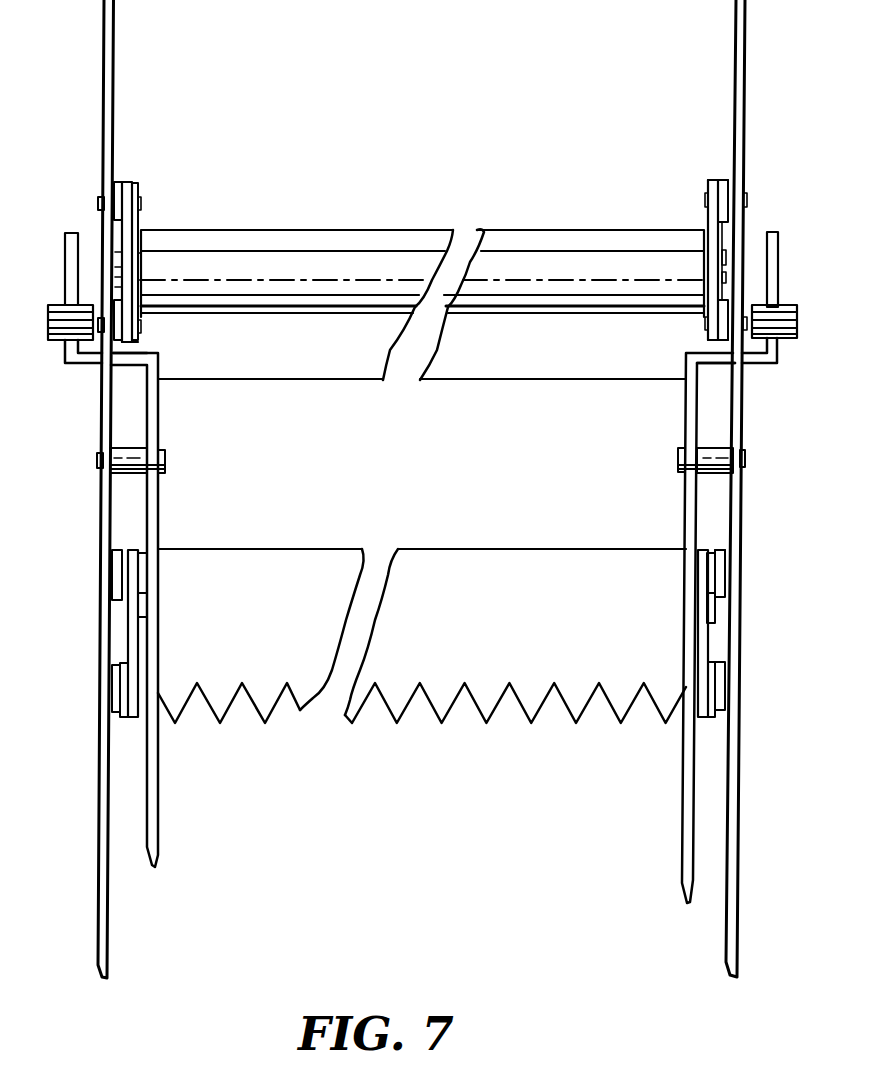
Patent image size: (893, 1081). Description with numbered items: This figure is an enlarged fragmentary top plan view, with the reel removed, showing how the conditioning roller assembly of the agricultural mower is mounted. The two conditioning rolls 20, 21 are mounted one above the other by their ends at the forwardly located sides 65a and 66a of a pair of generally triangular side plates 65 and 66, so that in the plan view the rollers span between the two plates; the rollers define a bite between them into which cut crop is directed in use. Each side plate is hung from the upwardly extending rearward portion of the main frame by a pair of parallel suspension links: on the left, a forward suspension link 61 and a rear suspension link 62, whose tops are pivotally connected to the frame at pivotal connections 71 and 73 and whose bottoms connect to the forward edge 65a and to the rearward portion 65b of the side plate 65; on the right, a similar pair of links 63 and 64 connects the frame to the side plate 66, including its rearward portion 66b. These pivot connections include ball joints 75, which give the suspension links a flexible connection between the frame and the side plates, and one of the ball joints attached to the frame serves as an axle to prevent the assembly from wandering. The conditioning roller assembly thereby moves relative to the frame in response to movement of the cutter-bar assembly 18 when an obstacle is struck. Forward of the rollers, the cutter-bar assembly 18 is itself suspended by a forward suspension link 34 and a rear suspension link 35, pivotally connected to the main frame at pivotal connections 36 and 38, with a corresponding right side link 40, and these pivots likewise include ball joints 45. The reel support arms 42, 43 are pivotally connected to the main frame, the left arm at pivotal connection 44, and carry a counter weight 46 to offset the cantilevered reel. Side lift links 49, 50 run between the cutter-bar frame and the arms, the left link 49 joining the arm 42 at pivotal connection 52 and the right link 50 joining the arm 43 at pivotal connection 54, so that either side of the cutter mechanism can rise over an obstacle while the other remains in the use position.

The cutter-bar assembly 18 is at (484, 548).
The conditioning roll 20 is at (538, 315).
The conditioning roll 21 is at (580, 230).
The forward suspension link 34 is at (726, 662).
The rear suspension link 35 is at (718, 548).
The pivotal connection 36 is at (743, 690).
The pivotal connection 38 is at (743, 570).
The suspension link 40 is at (112, 655).
The reel support arm 42 is at (685, 486).
The reel support arm 43 is at (160, 490).
The pivotal connection 44 is at (748, 458).
The ball joint 45 is at (112, 595).
The counter weight 46 is at (797, 318).
The side lift link 49 is at (698, 615).
The side lift link 50 is at (143, 618).
The pivotal connection 52 is at (697, 565).
The pivotal connection 54 is at (147, 568).
The forward suspension link 61 is at (722, 355).
The rear suspension link 62 is at (722, 180).
The suspension link 63 is at (117, 355).
The suspension link 64 is at (122, 182).
The side plate 65 is at (718, 238).
The forwardly located side 65a is at (708, 345).
The rearward portion 65b is at (710, 181).
The side plate 66 is at (118, 238).
The forwardly located side 66a is at (138, 345).
The rearward portion 66b is at (138, 183).
The pivotal connection 71 is at (705, 312).
The pivotal connection 73 is at (748, 200).
The ball joint 75 is at (117, 182).